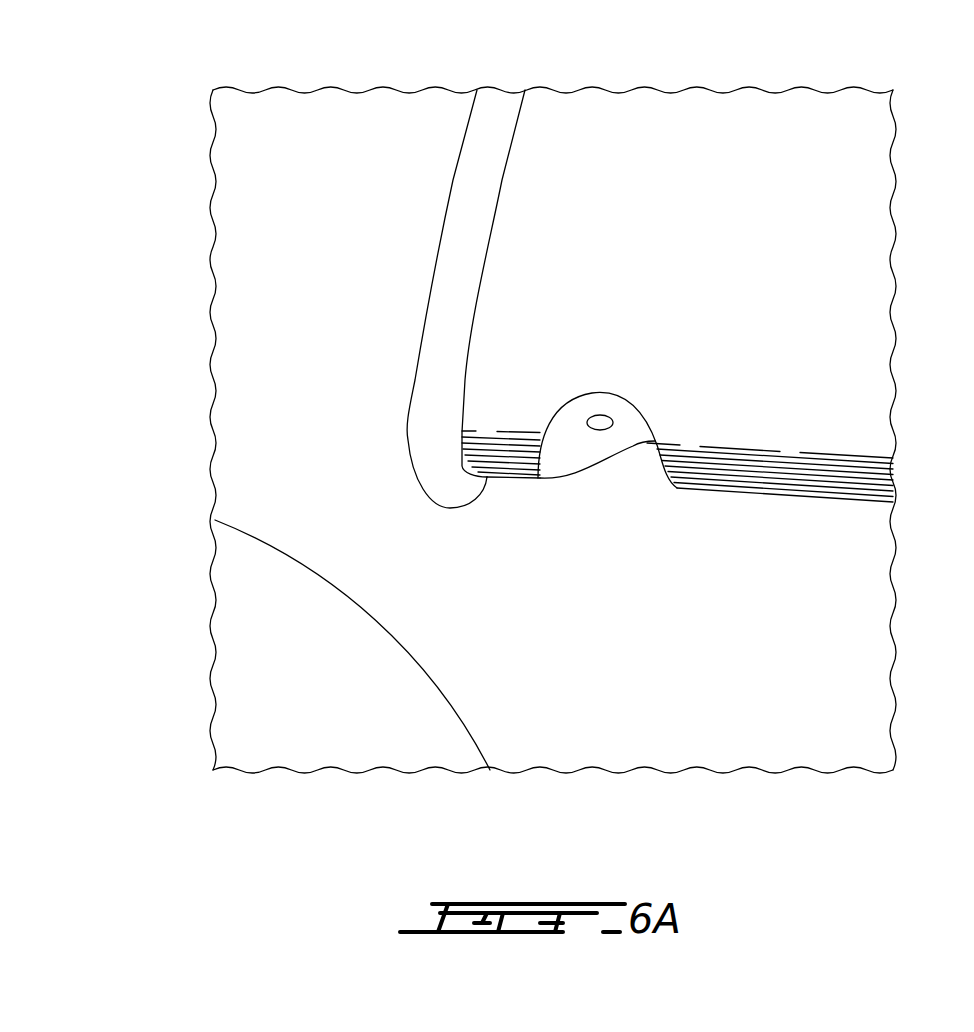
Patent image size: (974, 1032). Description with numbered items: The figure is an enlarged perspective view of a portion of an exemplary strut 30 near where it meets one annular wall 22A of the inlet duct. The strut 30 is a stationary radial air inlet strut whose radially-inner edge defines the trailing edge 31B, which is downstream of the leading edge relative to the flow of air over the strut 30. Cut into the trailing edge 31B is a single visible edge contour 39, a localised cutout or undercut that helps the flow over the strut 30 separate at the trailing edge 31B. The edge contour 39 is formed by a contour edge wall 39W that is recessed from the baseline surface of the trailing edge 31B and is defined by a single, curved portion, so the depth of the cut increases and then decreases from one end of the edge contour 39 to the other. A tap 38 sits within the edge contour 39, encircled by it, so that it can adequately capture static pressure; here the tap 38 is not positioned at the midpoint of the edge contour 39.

The strut 30 is at (805, 178).
The annular wall 22A is at (258, 468).
The tap 38 is at (600, 416).
The edge contour 39 is at (617, 487).
The contour edge wall 39W is at (658, 432).
The trailing edge 31B is at (820, 518).